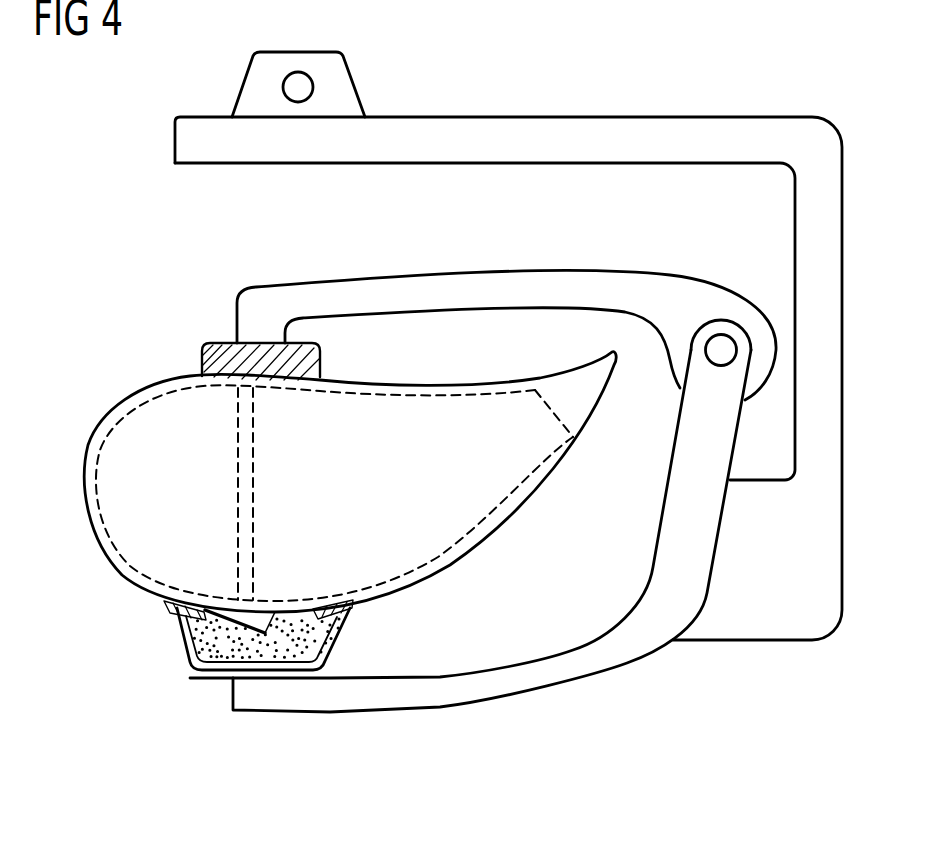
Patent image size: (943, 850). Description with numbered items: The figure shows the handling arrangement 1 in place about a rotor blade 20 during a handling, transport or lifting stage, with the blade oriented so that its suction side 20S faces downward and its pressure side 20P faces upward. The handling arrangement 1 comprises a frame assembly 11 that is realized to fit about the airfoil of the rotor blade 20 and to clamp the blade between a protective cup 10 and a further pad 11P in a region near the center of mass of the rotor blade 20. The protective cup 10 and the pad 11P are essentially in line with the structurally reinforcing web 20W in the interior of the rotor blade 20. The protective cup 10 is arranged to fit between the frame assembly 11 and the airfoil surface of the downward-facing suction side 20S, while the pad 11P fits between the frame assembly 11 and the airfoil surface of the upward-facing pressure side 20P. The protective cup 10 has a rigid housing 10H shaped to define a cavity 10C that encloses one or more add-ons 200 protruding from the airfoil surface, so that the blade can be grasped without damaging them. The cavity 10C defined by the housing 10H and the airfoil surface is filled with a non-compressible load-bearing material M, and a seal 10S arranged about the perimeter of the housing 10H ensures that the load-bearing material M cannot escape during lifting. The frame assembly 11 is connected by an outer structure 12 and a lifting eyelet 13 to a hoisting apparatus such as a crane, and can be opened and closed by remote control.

The handling arrangement 1 is at (770, 68).
The outer structure 12 is at (513, 127).
The lifting eyelet 13 is at (337, 80).
The frame assembly 11 is at (672, 678).
The pad 11P is at (322, 355).
The rotor blade 20 is at (75, 375).
The pressure side 20P is at (455, 375).
The structurally reinforcing web 20W is at (252, 468).
The suction side 20S is at (428, 577).
The protective cup 10 is at (145, 672).
The seal 10S is at (160, 607).
The cavity 10C is at (297, 643).
The housing 10H is at (331, 662).
The add-ons 200 is at (260, 624).
The load-bearing material M is at (220, 660).